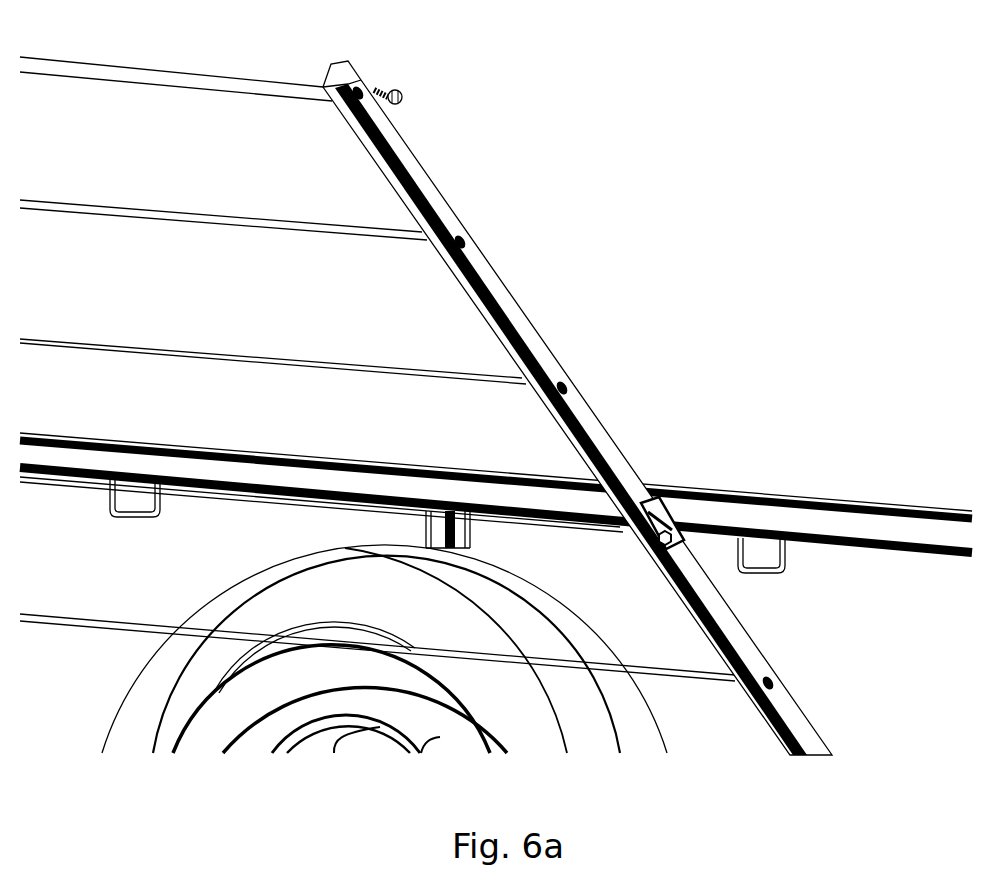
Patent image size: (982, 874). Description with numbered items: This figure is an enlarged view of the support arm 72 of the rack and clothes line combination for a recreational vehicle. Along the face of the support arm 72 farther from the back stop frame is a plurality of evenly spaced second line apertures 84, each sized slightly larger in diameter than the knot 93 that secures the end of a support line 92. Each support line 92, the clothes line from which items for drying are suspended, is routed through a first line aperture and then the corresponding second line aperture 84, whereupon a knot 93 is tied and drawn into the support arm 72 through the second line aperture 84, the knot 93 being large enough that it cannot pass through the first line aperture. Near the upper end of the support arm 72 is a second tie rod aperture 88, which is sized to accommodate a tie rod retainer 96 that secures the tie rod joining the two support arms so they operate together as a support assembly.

The support arm 72 is at (577, 419).
The second line aperture 84 is at (760, 708).
The second tie rod aperture 88 is at (363, 86).
The support line 92 is at (412, 640).
The knot 93 is at (658, 552).
The tie rod retainer 96 is at (402, 98).